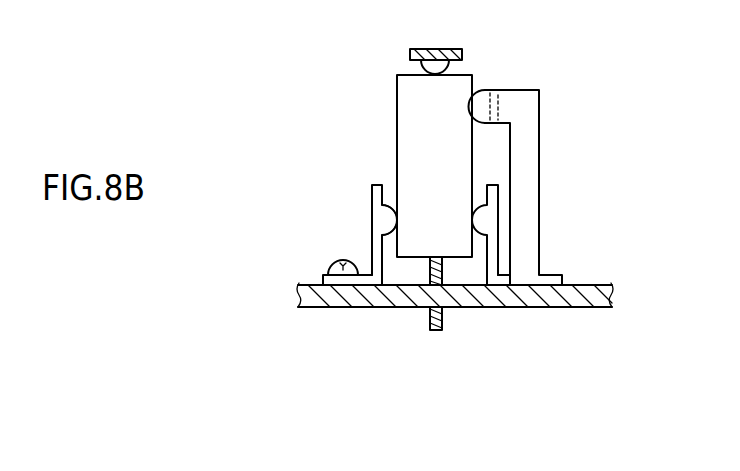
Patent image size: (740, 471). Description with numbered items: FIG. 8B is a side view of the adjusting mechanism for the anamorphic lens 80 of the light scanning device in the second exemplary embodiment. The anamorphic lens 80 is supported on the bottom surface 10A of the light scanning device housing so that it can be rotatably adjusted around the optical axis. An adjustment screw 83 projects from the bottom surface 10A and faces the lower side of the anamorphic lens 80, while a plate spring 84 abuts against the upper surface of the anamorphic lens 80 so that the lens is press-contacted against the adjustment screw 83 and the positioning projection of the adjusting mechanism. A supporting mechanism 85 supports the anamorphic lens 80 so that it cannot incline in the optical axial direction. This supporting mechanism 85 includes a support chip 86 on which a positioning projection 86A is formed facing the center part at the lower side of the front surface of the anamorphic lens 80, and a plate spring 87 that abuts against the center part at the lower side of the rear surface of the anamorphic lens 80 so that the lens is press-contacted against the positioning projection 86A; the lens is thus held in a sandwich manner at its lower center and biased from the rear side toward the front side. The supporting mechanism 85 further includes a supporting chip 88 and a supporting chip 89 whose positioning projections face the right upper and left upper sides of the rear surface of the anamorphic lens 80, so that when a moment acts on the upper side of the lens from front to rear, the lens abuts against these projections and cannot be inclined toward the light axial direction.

The bottom surface 10A is at (322, 306).
The anamorphic lens 80 is at (397, 127).
The adjustment screw 83 is at (445, 257).
The plate spring 84 is at (410, 55).
The supporting mechanism 85 is at (479, 267).
The support chip 86 is at (390, 278).
The positioning projection 86A is at (432, 182).
The plate spring 87 is at (480, 268).
The supporting chip 88 is at (551, 246).
The supporting chip 89 is at (540, 237).